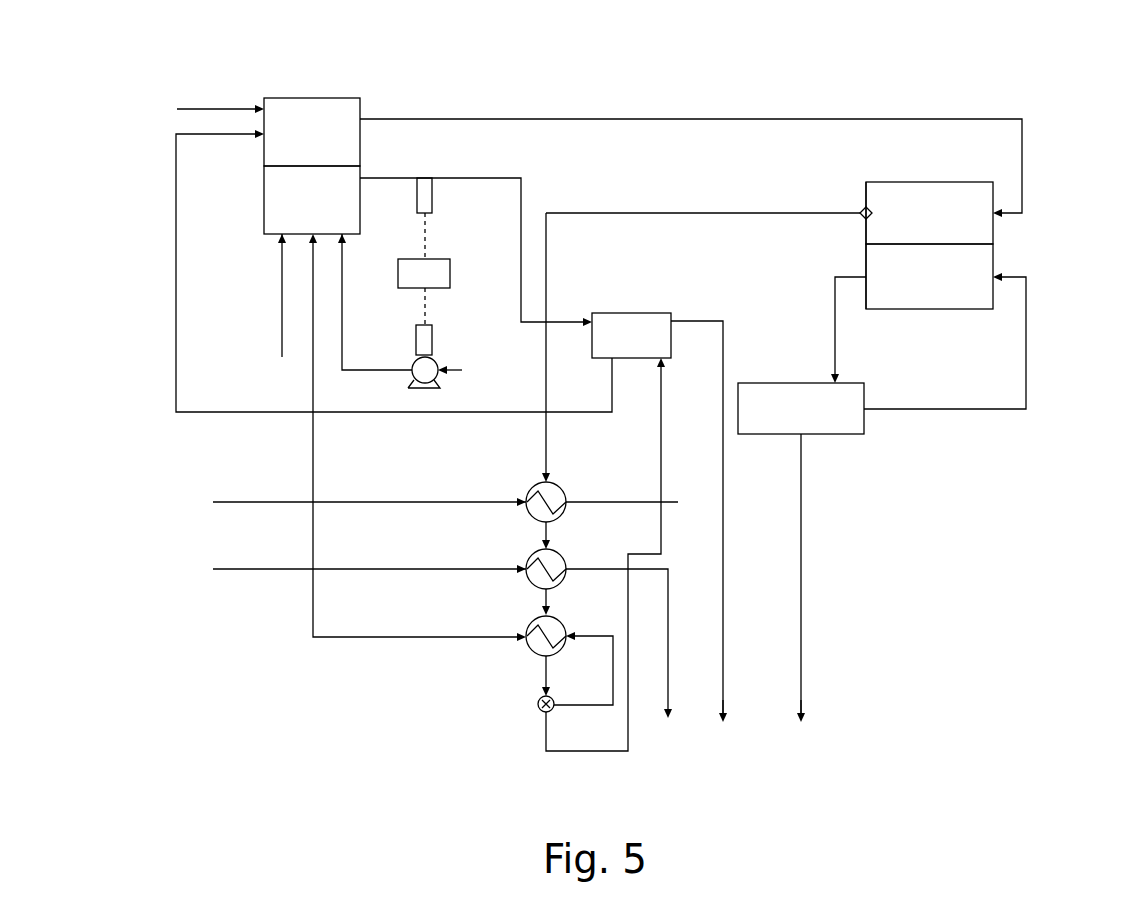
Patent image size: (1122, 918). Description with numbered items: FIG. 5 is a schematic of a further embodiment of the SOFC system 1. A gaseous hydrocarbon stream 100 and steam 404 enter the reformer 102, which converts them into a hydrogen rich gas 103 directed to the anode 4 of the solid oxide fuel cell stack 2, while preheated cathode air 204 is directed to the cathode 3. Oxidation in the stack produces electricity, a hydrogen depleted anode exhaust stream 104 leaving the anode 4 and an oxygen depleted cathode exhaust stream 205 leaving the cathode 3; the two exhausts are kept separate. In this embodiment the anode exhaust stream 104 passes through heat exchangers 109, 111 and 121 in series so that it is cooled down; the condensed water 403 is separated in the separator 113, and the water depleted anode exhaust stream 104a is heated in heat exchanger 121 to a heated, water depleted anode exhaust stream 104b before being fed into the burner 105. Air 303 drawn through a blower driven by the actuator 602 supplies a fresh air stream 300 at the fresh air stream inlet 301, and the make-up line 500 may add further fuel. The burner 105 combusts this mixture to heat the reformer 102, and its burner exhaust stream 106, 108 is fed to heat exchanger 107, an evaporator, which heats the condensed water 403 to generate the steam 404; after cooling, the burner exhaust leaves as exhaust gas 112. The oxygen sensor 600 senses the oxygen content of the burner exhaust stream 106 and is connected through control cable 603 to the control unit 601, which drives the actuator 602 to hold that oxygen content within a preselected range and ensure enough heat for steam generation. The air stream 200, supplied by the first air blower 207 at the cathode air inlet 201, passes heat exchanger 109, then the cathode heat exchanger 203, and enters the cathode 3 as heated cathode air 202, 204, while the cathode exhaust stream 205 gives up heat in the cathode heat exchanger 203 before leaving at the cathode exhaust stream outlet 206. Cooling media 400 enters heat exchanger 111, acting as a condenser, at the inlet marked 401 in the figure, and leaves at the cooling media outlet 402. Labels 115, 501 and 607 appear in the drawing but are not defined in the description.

The SOFC system 1 is at (841, 88).
The solid oxide fuel cell stack 2 is at (878, 258).
The cathode 3 is at (929, 276).
The anode 4 is at (929, 213).
The gaseous hydrocarbon stream 100 is at (221, 107).
The reformer 102 is at (312, 132).
The stream of hydrogen rich gas 103 is at (648, 118).
The anode exhaust stream 104 is at (714, 212).
The water depleted anode exhaust stream 104a is at (594, 707).
The heated, water depleted anode exhaust stream 104b is at (342, 638).
The burner 105 is at (312, 200).
The burner exhaust stream 106 is at (485, 178).
The heat exchanger 107 is at (631, 335).
The burner exhaust stream 108 is at (724, 497).
The heat exchanger 109 is at (560, 516).
The heat exchanger 111 is at (560, 583).
The exhaust gas 112 is at (725, 722).
The separator 113 is at (537, 704).
The stream 115 is at (542, 667).
The heat exchanger 121 is at (548, 650).
The air stream 200 is at (232, 502).
The cathode air inlet 201 is at (518, 494).
The heated cathode air 202 is at (430, 372).
The cathode heat exchanger 203 is at (801, 408).
The preheated cathode air stream 204 is at (1027, 342).
The cathode exhaust stream 205 is at (836, 322).
The cathode exhaust stream outlet 206 is at (802, 578).
The first air blower 207 is at (803, 722).
The fresh air stream 300 is at (343, 325).
The fresh air stream inlet 301 is at (343, 237).
The air 303 is at (462, 370).
The cooling media 400 is at (237, 572).
The cooling medium inlet 401 is at (520, 570).
The cooling media outlet 402 is at (672, 683).
The condensed water 403 is at (605, 752).
The steam 404 is at (175, 273).
The make-up line 500 is at (280, 320).
The stripping medium inlet 501 is at (280, 236).
The oxygen sensor 600 is at (429, 188).
The control unit 601 is at (424, 273).
The actuator 602 is at (429, 343).
The control cable 603 is at (427, 245).
The signal line 607 is at (427, 308).